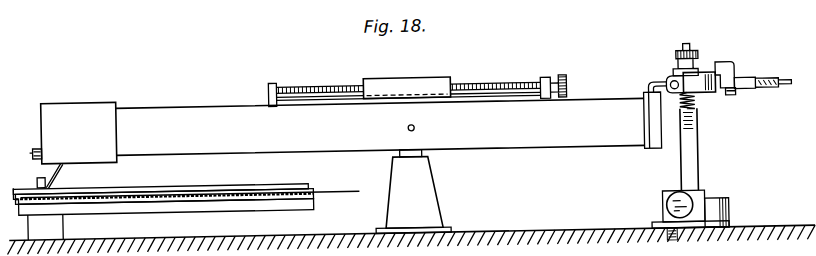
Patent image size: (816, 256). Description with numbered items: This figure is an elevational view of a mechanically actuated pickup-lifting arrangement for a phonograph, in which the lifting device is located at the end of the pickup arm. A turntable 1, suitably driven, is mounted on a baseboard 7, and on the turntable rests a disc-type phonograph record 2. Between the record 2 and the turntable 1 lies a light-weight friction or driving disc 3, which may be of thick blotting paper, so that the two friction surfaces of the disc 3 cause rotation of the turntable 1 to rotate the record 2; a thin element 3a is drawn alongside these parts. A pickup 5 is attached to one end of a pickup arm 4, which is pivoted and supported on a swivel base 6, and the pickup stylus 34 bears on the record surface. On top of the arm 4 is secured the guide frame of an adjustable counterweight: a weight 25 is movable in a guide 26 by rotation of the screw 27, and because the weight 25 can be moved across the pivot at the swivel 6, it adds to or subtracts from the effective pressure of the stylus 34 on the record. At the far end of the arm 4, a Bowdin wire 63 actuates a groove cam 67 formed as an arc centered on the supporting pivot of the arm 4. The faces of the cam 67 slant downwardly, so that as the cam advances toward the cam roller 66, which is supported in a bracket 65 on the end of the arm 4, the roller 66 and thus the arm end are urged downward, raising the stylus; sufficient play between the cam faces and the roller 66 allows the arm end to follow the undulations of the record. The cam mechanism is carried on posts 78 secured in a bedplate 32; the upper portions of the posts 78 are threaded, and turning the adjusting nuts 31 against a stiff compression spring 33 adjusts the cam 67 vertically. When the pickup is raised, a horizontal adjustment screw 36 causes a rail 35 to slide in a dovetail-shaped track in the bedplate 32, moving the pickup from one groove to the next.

The turntable 1 is at (213, 200).
The phonograph record 2 is at (183, 171).
The friction disc 3 is at (258, 182).
The pointer wire 3a is at (340, 190).
The pickup arm 4 is at (208, 104).
The pickup 5 is at (88, 97).
The swivel base 6 is at (428, 199).
The baseboard 7 is at (581, 233).
The counterweight 25 is at (423, 82).
The guide 26 is at (345, 86).
The screw 27 is at (565, 78).
The adjusting nuts 31 is at (678, 60).
The bedplate 32 is at (728, 216).
The compression spring 33 is at (698, 104).
The pickup stylus 34 is at (62, 164).
The rail 35 is at (713, 208).
The horizontal adjustment screw 36 is at (675, 197).
The Bowdin wire 63 is at (783, 84).
The bracket 65 is at (662, 87).
The cam roller 66 is at (668, 75).
The groove cam 67 is at (687, 88).
The posts 78 is at (698, 151).